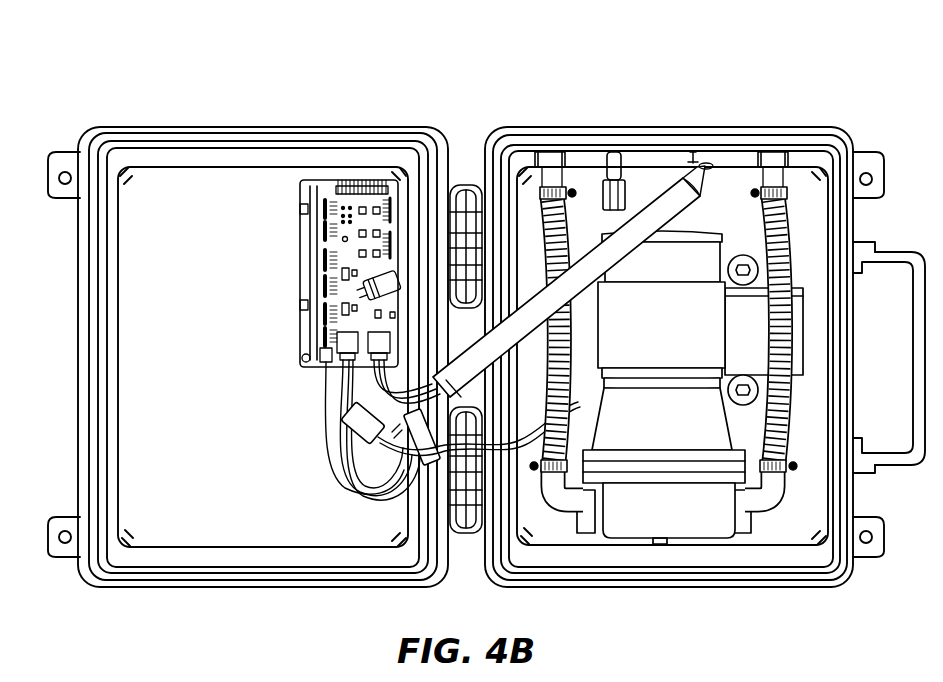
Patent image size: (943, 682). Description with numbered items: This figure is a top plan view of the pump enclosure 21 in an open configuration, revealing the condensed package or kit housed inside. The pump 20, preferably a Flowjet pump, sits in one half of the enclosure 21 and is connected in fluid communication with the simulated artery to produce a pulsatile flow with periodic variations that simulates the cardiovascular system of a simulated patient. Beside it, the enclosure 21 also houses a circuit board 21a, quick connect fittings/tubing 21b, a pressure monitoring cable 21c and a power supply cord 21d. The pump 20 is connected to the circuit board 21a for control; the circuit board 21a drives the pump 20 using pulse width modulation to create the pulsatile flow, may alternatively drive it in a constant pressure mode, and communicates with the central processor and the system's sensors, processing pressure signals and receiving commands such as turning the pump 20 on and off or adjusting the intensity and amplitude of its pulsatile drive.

The pump 20 is at (687, 523).
The enclosure 21 is at (238, 104).
The circuit board 21a is at (299, 260).
The quick connect fittings/tubing 21b is at (745, 212).
The pressure monitoring cable 21c is at (357, 430).
The power supply cord 21d is at (653, 192).